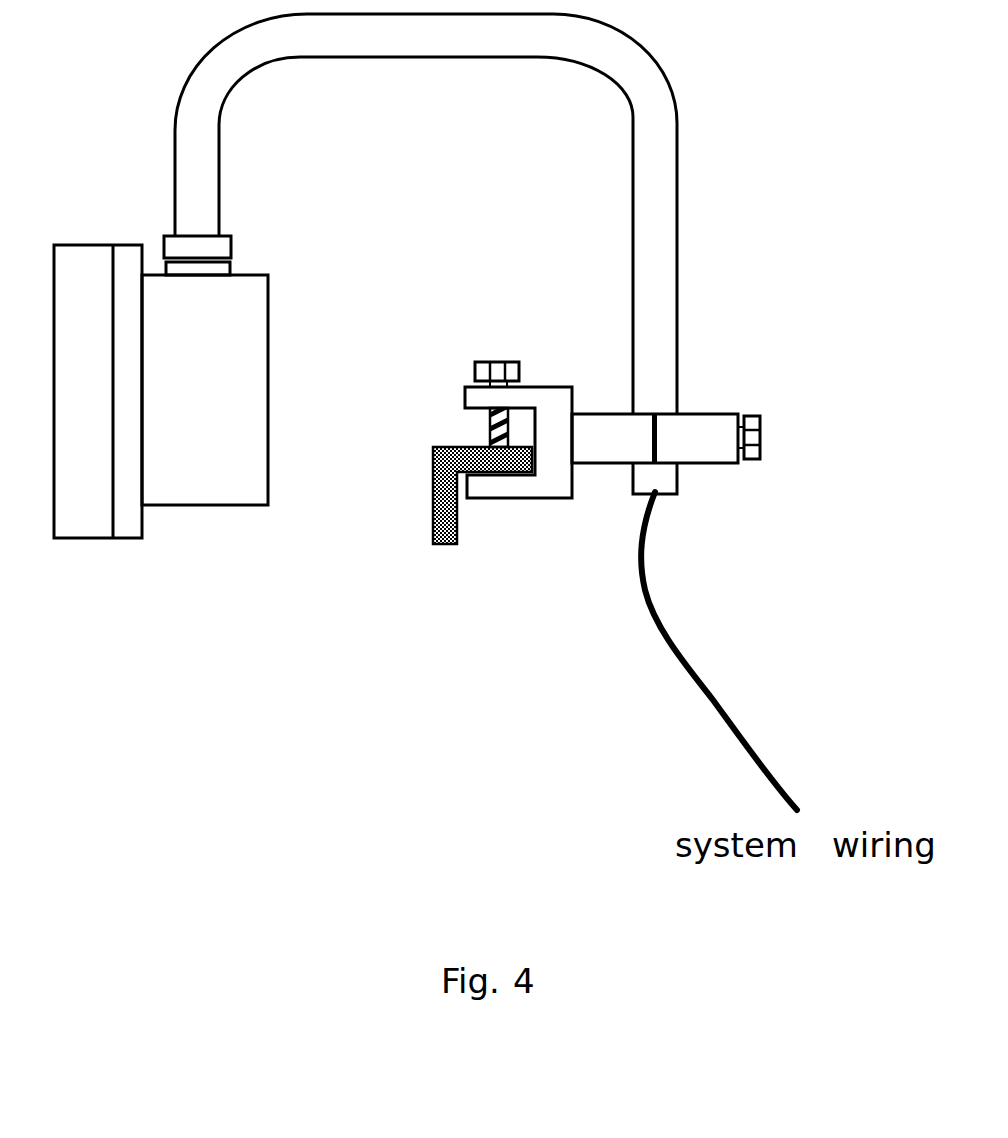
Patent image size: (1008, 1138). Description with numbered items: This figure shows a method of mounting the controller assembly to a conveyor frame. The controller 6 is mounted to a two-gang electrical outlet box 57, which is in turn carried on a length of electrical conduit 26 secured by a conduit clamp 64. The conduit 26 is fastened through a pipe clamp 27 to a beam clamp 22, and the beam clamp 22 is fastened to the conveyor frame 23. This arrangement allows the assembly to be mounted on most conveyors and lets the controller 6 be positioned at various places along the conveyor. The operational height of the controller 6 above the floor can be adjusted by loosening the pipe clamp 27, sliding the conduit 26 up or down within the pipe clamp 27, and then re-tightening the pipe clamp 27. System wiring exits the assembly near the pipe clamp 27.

The controller 6 is at (112, 550).
The 2-gang electrical outlet box 57 is at (198, 517).
The conduit clamp 64 is at (244, 251).
The electrical conduit 26 is at (280, 75).
The beam clamps 22 is at (538, 516).
The conveyor frame 23 is at (453, 553).
The pipe clamp 27 is at (712, 475).